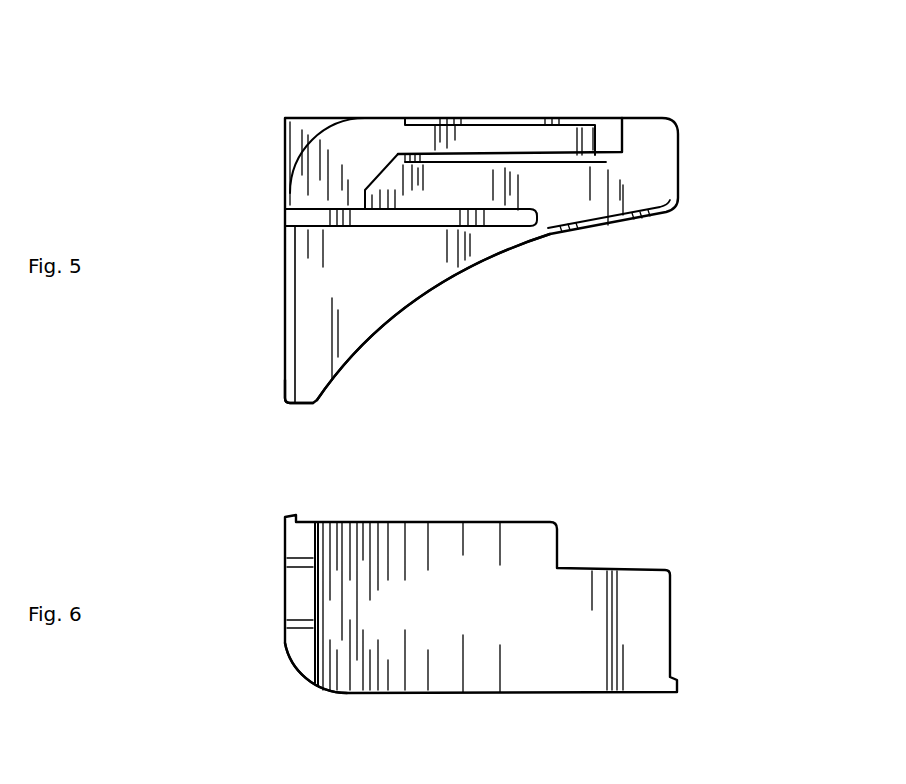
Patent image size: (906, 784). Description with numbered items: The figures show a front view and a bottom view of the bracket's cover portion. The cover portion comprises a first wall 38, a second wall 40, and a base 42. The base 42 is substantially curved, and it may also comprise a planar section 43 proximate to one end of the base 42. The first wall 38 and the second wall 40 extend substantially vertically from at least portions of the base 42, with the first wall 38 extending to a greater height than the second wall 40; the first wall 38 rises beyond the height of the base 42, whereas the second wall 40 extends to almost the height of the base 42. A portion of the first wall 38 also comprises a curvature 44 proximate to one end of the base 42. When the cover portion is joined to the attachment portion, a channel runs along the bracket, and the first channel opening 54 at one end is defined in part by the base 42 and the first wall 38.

In FIG. 5, the first wall 38 is at (635, 147).
In FIG. 5, the first channel opening 54 is at (630, 180).
In FIG. 5, the base 42 is at (583, 237).
In FIG. 6, the base 42 is at (458, 585).
In FIG. 5, the second wall 40 is at (375, 287).
In FIG. 5, the planar section 43 is at (302, 410).
In FIG. 6, the planar section 43 is at (295, 590).
In FIG. 6, the curvature 44 is at (315, 687).